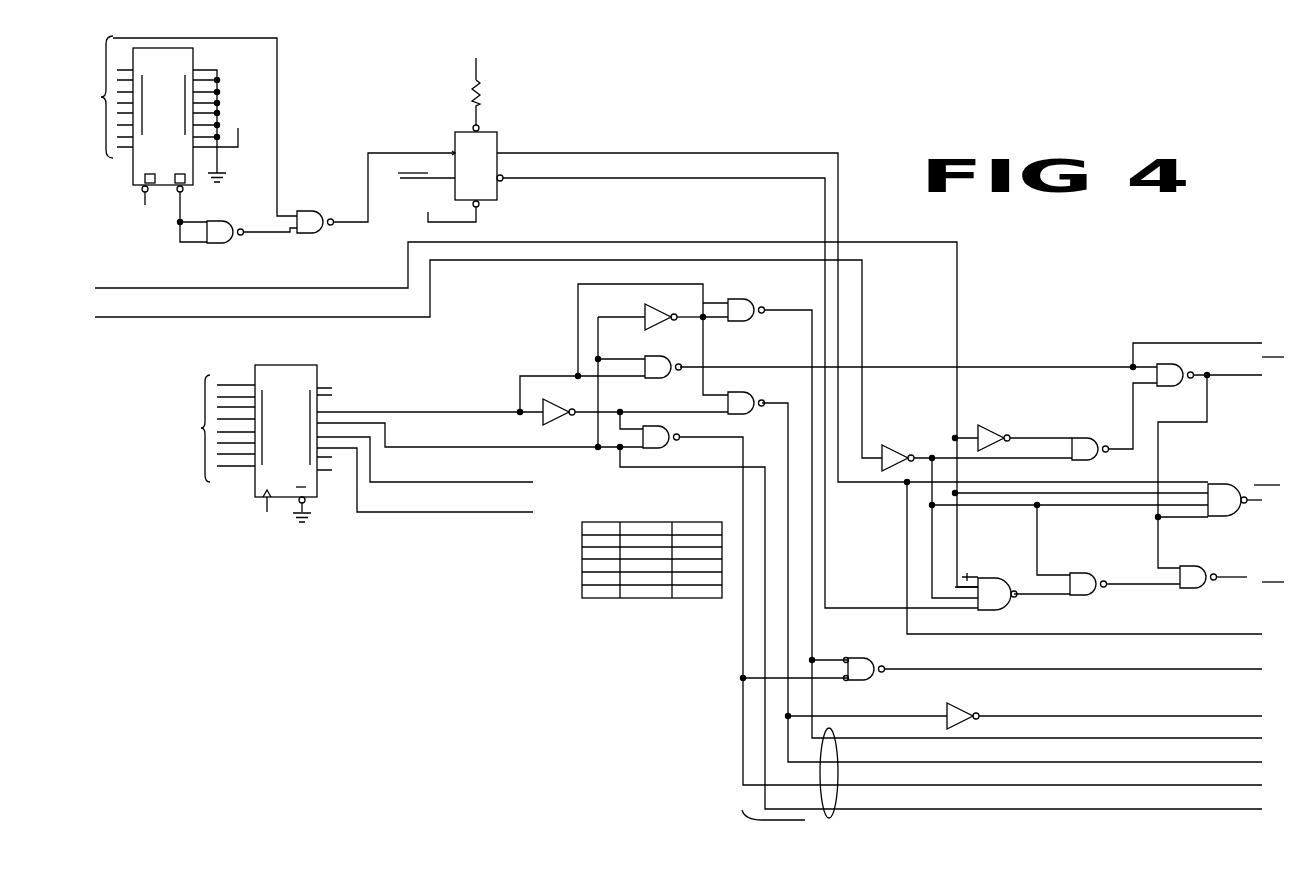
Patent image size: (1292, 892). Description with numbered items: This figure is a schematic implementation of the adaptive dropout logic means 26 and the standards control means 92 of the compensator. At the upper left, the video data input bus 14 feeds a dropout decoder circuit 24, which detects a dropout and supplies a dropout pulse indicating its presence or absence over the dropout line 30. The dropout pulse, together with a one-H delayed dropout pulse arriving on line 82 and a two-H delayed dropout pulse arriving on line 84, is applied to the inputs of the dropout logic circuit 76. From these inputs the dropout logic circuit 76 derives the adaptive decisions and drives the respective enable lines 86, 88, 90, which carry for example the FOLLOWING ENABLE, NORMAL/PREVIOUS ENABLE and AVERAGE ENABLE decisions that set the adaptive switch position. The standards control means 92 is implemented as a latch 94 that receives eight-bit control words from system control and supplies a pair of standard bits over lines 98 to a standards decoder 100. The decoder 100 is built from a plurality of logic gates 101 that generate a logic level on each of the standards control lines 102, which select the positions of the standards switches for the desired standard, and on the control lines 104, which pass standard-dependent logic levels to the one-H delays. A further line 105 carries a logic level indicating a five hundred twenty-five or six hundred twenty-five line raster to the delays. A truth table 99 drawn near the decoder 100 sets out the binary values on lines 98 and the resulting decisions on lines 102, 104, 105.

The video data input bus 14 is at (86, 97).
The dropout decoder circuit 24 is at (252, 81).
The adaptive dropout logic means 26 is at (905, 215).
The dropout line 30 is at (400, 152).
The dropout logic circuit 76 is at (1062, 413).
The line 82 is at (102, 322).
The line 84 is at (102, 283).
The enable line 86 is at (1228, 377).
The enable line 88 is at (1247, 575).
The enable line 90 is at (1252, 511).
The standards control means 92 is at (555, 372).
The latch 94 is at (288, 366).
The lines 98 is at (520, 440).
The truth table 99 is at (657, 519).
The standards decoder 100 is at (787, 322).
The logic gates 101 is at (683, 387).
The standards control lines 102 is at (1140, 342).
The control lines 104 is at (1206, 787).
The line 105 is at (1213, 812).